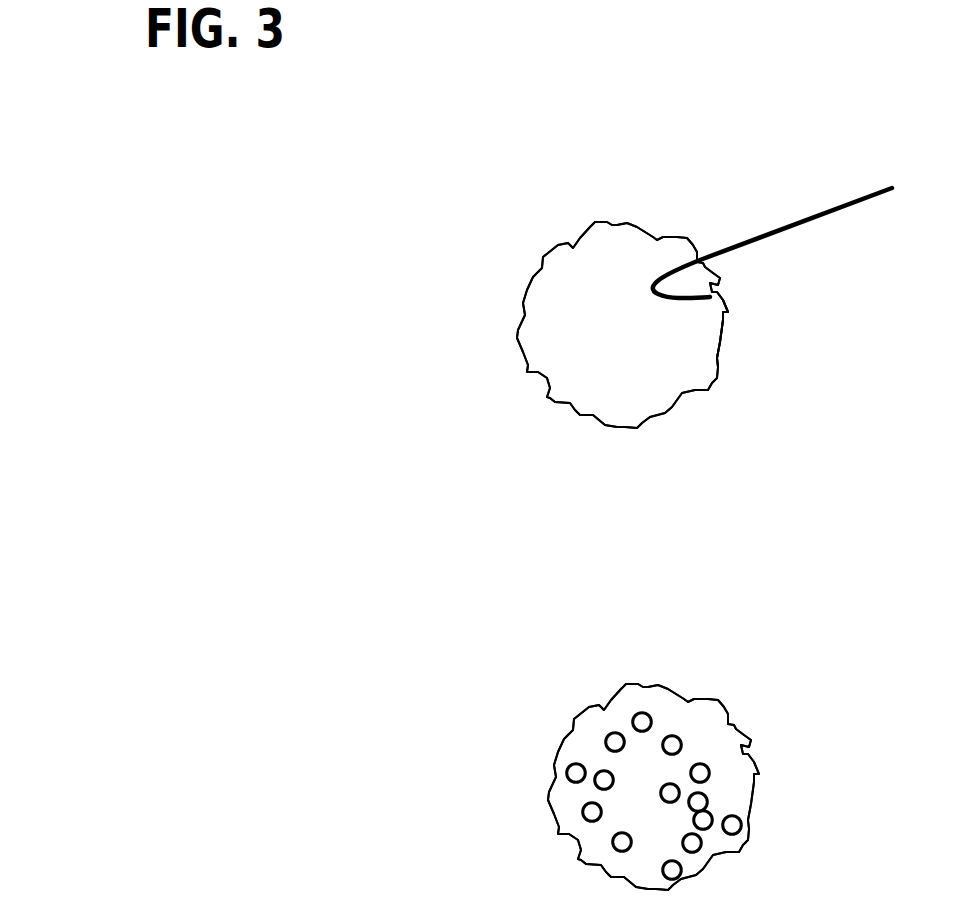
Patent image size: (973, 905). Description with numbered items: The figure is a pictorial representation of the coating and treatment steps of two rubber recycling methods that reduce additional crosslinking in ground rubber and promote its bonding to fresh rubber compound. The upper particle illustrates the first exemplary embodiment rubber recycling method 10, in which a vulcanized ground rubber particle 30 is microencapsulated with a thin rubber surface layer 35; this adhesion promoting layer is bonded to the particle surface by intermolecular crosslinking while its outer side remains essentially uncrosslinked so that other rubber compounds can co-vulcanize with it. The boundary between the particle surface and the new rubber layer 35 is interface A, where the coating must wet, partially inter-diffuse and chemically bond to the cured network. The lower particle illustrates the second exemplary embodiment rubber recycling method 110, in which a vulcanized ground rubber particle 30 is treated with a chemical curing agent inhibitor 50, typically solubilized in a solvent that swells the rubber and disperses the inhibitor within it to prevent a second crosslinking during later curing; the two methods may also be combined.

The first exemplary embodiment rubber recycling method 10 is at (605, 301).
The vulcanized ground rubber particles 30 is at (678, 232).
The thin rubber surface layer 35 is at (722, 362).
The interface A is at (791, 236).
The chemical curing agent inhibitor 50 is at (709, 766).
The second exemplary embodiment rubber recycling method 110 is at (596, 787).